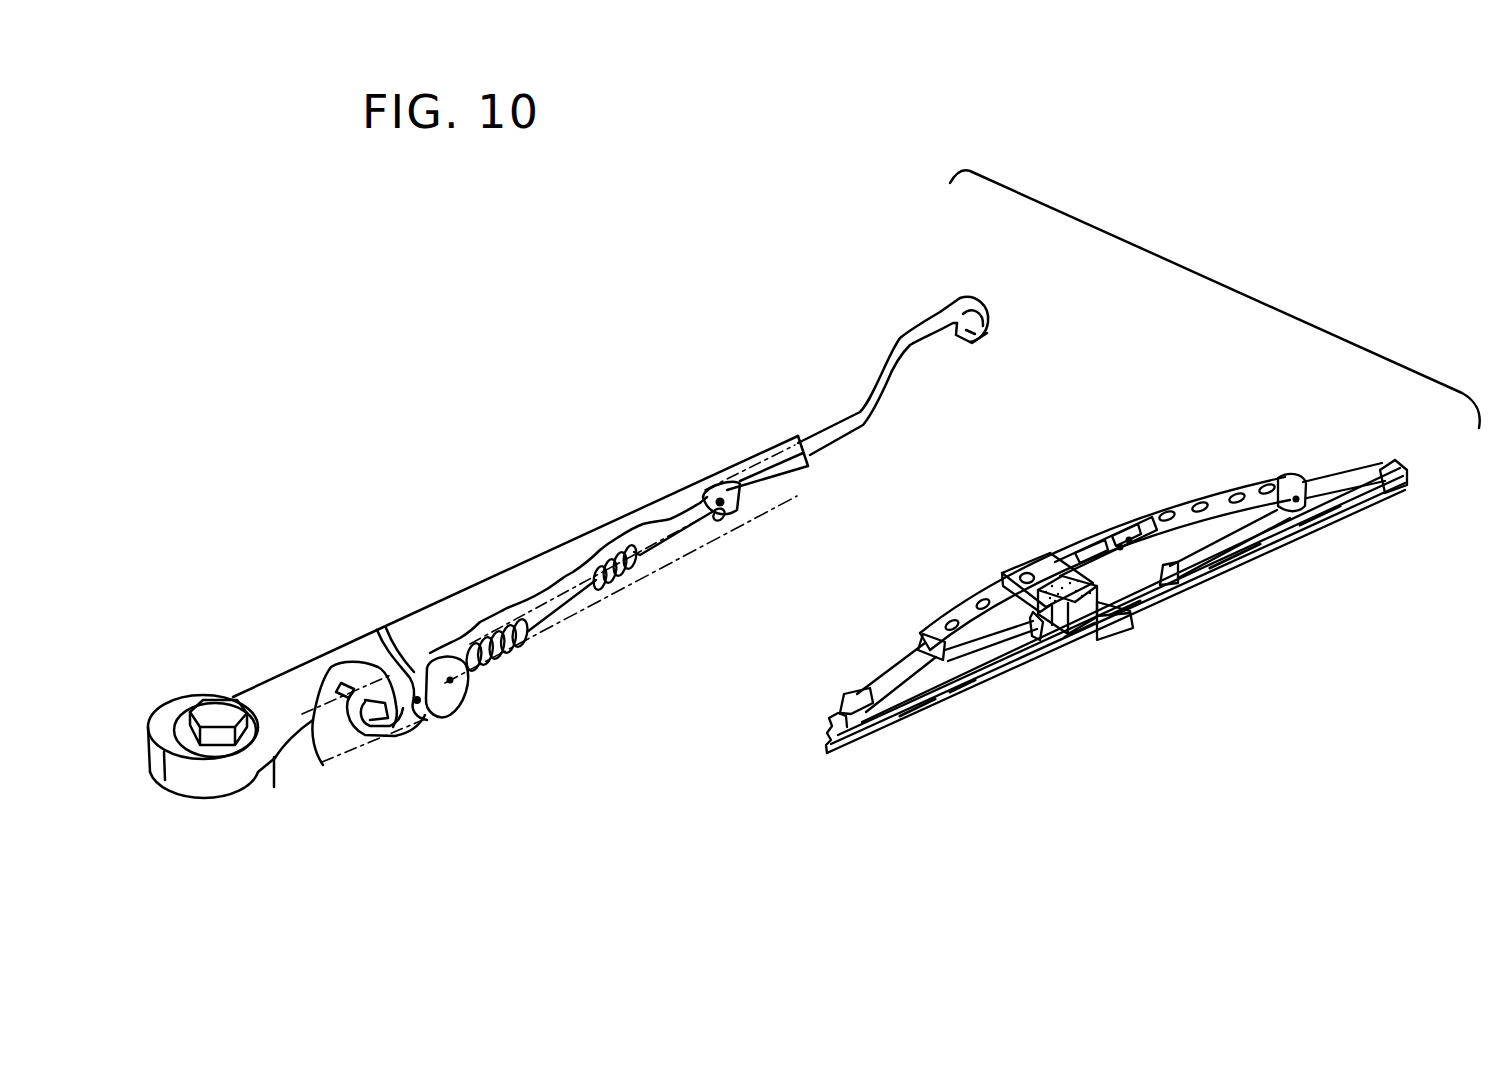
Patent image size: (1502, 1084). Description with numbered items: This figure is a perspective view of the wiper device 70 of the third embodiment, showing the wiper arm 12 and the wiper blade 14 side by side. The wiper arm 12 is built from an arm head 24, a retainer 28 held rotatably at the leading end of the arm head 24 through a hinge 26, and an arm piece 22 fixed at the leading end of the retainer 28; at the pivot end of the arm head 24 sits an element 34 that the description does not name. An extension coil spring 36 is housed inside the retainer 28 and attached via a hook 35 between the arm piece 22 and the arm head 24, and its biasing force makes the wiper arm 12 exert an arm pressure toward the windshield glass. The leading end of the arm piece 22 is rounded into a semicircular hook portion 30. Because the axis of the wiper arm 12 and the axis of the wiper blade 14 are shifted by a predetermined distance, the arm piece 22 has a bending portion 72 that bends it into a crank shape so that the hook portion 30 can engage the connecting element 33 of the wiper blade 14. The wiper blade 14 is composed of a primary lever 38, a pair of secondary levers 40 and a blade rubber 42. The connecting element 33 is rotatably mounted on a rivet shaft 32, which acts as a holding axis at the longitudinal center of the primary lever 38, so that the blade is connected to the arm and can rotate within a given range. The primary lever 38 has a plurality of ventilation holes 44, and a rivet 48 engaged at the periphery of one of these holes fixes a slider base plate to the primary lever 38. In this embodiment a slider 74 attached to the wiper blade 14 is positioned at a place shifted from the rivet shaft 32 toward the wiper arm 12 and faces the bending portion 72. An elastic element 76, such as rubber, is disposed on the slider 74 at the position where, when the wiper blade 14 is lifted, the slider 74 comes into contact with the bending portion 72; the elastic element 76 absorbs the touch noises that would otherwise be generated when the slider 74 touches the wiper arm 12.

The wiper arm 12 is at (614, 384).
The wiper blade 14 is at (1128, 416).
The arm piece 22 is at (813, 440).
The arm head 24 is at (292, 677).
The hinge 26 is at (425, 722).
The retainer 28 is at (447, 616).
The hook portion 30 is at (990, 320).
The rivet shaft 32 is at (1124, 540).
The connecting element 33 is at (1107, 541).
The pivot nut 34 is at (226, 692).
The hook 35 is at (420, 715).
The extension coil spring 36 is at (523, 655).
The primary lever 38 is at (1256, 490).
The secondary levers 40 is at (900, 675).
The blade rubber 42 is at (1392, 462).
The ventilation holes 44 is at (982, 600).
The rivet 48 is at (1028, 571).
The wiper device 70 is at (772, 302).
The bending portion 72 is at (917, 326).
The slider 74 is at (1110, 630).
The elastic element 76 is at (1035, 616).